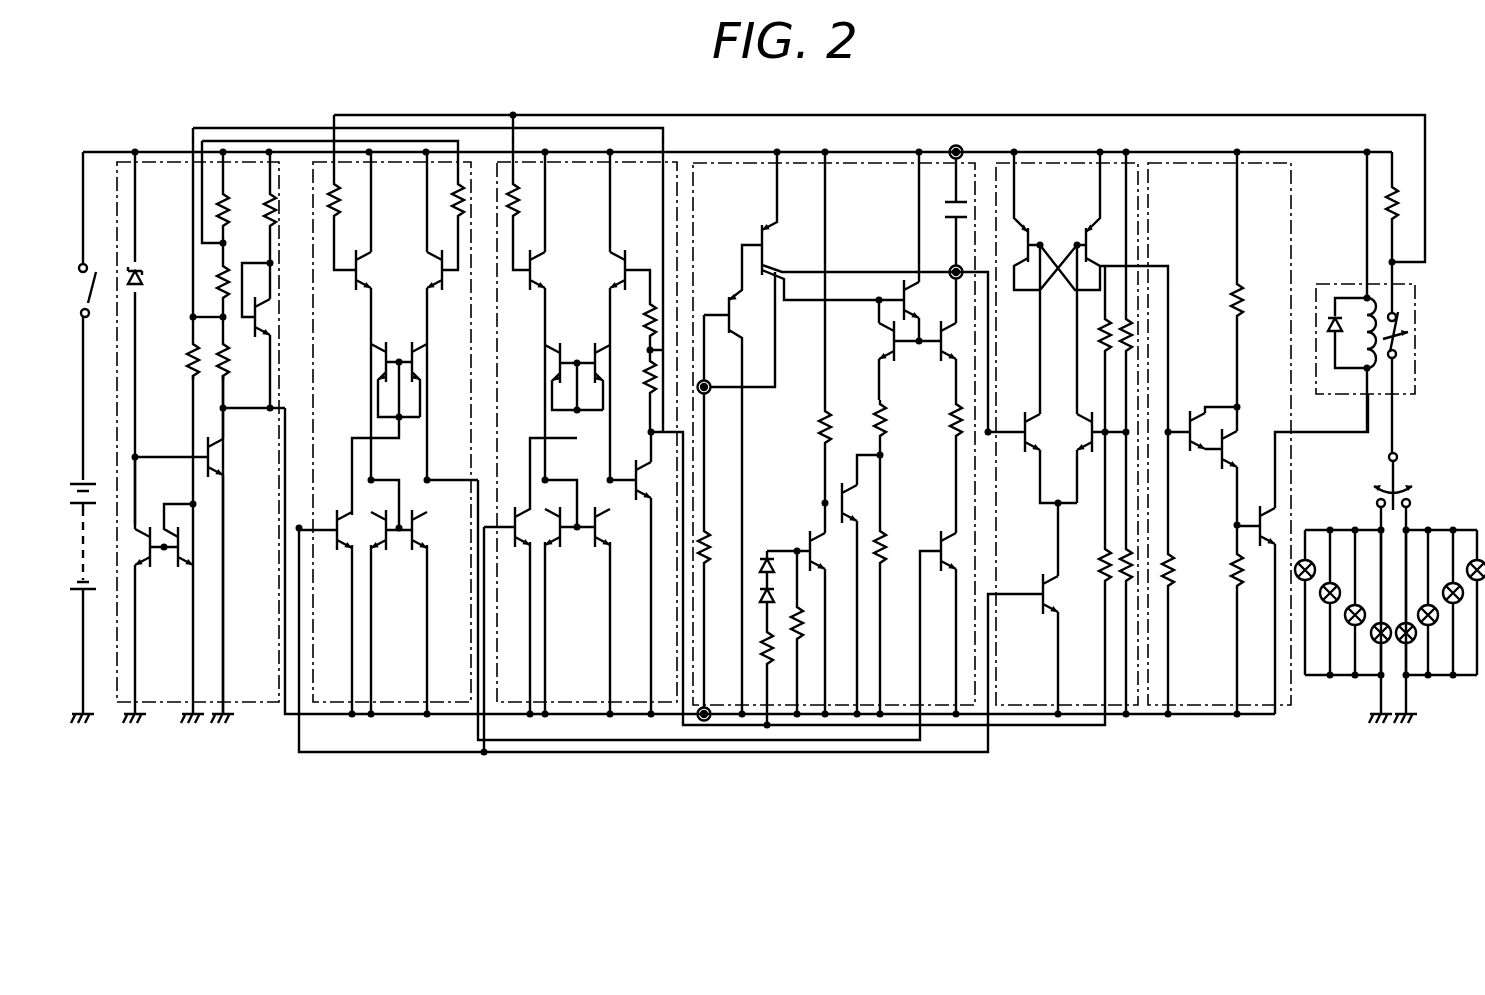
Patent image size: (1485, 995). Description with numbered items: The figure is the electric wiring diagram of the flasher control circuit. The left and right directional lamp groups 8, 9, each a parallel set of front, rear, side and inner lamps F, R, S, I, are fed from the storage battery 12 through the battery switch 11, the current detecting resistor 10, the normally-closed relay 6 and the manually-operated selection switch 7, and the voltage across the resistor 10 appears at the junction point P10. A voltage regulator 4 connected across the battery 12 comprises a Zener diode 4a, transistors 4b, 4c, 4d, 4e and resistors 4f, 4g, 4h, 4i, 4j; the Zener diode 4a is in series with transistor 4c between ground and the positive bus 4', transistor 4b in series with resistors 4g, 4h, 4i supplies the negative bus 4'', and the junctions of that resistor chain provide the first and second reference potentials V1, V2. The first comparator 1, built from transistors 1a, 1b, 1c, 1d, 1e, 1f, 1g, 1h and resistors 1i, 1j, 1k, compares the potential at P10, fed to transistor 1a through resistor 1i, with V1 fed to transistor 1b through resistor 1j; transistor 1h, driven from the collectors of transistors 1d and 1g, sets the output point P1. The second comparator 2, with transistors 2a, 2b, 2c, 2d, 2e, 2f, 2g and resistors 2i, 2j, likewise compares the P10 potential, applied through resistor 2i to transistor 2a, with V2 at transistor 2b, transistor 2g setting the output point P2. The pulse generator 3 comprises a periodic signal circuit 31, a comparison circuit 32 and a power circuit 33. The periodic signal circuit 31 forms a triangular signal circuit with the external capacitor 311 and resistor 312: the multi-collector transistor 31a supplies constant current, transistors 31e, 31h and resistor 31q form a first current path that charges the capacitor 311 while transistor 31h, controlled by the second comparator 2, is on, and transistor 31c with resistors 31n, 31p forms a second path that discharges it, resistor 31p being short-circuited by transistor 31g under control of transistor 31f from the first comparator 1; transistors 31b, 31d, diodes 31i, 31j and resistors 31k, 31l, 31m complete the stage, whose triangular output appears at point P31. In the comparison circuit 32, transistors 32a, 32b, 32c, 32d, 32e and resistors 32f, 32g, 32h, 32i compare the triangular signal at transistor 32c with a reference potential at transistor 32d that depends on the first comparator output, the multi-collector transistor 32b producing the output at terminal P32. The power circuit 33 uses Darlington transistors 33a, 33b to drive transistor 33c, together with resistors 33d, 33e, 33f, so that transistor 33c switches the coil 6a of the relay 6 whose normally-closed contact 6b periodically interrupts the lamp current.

The first comparator 1 is at (683, 160).
The second comparator 2 is at (465, 160).
The pulse generator 3 is at (698, 97).
The voltage regulator 4 is at (168, 130).
The positive bus 4' is at (96, 124).
The negative bus 4'' is at (271, 734).
The Zener diode 4a is at (145, 266).
The transistor 4b is at (222, 457).
The transistor 4c is at (143, 566).
The transistor 4d is at (185, 566).
The transistor 4e is at (272, 312).
The resistor 4f is at (188, 356).
The resistor 4g is at (230, 212).
The resistor 4h is at (232, 306).
The resistor 4i is at (230, 356).
The resistor 4j is at (262, 214).
The first reference signal V1 is at (200, 130).
The second reference signal V2 is at (236, 140).
The transistor 1a is at (541, 270).
The transistor 1b is at (622, 268).
The transistor 1c is at (553, 366).
The transistor 1d is at (598, 365).
The transistor 1e is at (528, 546).
The transistor 1f is at (550, 548).
The transistor 1g is at (606, 548).
The transistor 1h is at (650, 514).
The resistor 1i is at (508, 226).
The resistor 1j is at (647, 312).
The resistor 1k is at (646, 396).
The transistor 2a is at (362, 272).
The transistor 2b is at (438, 262).
The transistor 2c is at (380, 363).
The transistor 2d is at (415, 363).
The transistor 2e is at (348, 550).
The transistor 2f is at (377, 548).
The transistor 2g is at (430, 548).
The resistor 2i is at (332, 236).
The resistor 2j is at (457, 236).
The output point P1 is at (703, 395).
The output point P2 is at (478, 478).
The junction point P10 is at (1400, 262).
The output point P31 is at (989, 422).
The output terminal P32 is at (1160, 272).
The periodic signal circuit 31 is at (881, 178).
The capacitor 311 is at (940, 216).
The resistor 312 is at (708, 535).
The transistor 31a is at (770, 246).
The transistor 31b is at (736, 322).
The transistor 31c is at (891, 339).
The transistor 31d is at (906, 318).
The transistor 31e is at (949, 358).
The transistor 31f is at (816, 556).
The transistor 31g is at (850, 503).
The transistor 31h is at (940, 533).
The diode 31i is at (760, 560).
The diode 31j is at (758, 596).
The resistor 31k is at (780, 652).
The resistor 31l is at (806, 620).
The resistor 31m is at (830, 424).
The resistor 31n is at (888, 426).
The resistor 31p is at (888, 568).
The resistor 31q is at (954, 440).
The comparison circuit 32 is at (1052, 178).
The transistor 32a is at (1023, 232).
The transistor 32b is at (1095, 225).
The transistor 32c is at (1030, 451).
The transistor 32d is at (1085, 452).
The transistor 32e is at (1046, 609).
The resistor 32f is at (1100, 331).
The resistor 32g is at (1120, 353).
The resistor 32h is at (1099, 570).
The resistor 32i is at (1120, 586).
The power circuit 33 is at (1203, 178).
The transistor 33a is at (1198, 412).
The transistor 33b is at (1233, 470).
The transistor 33c is at (1275, 562).
The resistor 33d is at (1172, 566).
The resistor 33e is at (1232, 300).
The resistor 33f is at (1230, 576).
The relay 6 is at (1410, 323).
The coil 6a is at (1362, 372).
The normally-closed contact 6b is at (1405, 353).
The selection switch 7 is at (1398, 463).
The directional lamp group 8 is at (1384, 622).
The directional lamp group 9 is at (1440, 674).
The current detecting resistor 10 is at (1400, 210).
The battery switch 11 is at (80, 296).
The storage battery 12 is at (80, 480).
The front directional lamp F is at (1302, 583).
The rear directional lamp R is at (1393, 605).
The side directional lamp S is at (1396, 627).
The inner directional lamp I is at (1396, 646).